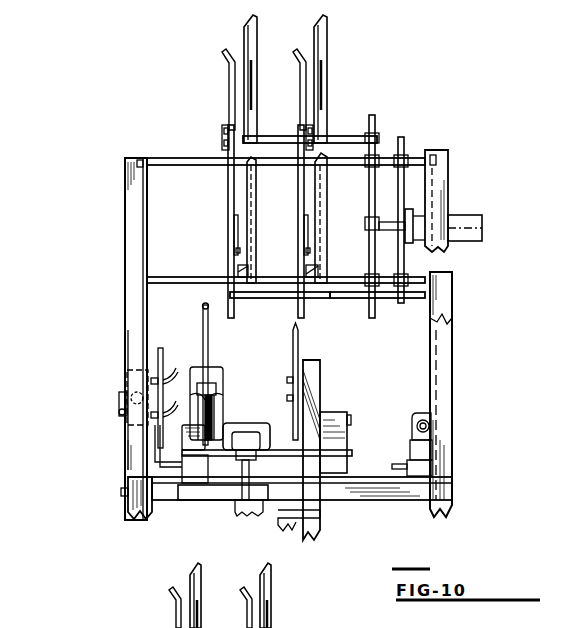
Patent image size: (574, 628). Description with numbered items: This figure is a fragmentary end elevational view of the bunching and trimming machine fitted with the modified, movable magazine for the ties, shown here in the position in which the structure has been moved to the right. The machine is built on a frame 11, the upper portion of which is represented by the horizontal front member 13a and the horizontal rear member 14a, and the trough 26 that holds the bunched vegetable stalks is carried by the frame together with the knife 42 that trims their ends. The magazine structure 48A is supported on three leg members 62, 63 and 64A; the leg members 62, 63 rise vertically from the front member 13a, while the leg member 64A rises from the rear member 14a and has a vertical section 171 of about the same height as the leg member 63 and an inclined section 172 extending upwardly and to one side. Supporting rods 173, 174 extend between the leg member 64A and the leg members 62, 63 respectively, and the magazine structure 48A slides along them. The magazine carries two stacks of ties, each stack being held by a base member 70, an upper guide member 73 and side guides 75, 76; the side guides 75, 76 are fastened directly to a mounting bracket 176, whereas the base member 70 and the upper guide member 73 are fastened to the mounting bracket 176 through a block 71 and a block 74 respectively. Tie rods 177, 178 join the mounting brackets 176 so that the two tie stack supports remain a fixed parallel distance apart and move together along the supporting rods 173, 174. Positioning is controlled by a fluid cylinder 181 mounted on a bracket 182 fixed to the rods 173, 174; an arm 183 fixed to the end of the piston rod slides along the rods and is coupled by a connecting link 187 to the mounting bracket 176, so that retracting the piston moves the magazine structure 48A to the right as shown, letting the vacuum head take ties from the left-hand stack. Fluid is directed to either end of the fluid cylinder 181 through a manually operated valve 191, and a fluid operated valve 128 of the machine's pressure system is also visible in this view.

The frame 11 is at (127, 507).
The horizontal front member 13a is at (453, 493).
The horizontal rear member 14a is at (128, 486).
The trough 26 is at (244, 421).
The knife 42 is at (299, 340).
The magazine structure 48A is at (378, 66).
The leg member 62 is at (450, 206).
The leg member 63 is at (452, 298).
The leg member 64A is at (123, 253).
The base member 70 is at (254, 210).
The block 71 is at (243, 272).
The upper guide member 73 is at (243, 27).
The block 74 is at (240, 133).
The side guide 75 is at (229, 66).
The side guide 76 is at (234, 228).
The fluid operated valve 128 is at (423, 445).
The vertical section 171 is at (127, 333).
The inclined section 172 is at (132, 194).
The supporting rod 173 is at (172, 160).
The supporting rod 174 is at (180, 277).
The mounting bracket 176 is at (228, 198).
The tie rod 177 is at (277, 135).
The tie rod 178 is at (268, 299).
The fluid cylinder 181 is at (483, 230).
The bracket 182 is at (405, 190).
The arm 183 is at (377, 125).
The connecting link 187 is at (315, 299).
The valve 191 is at (126, 388).